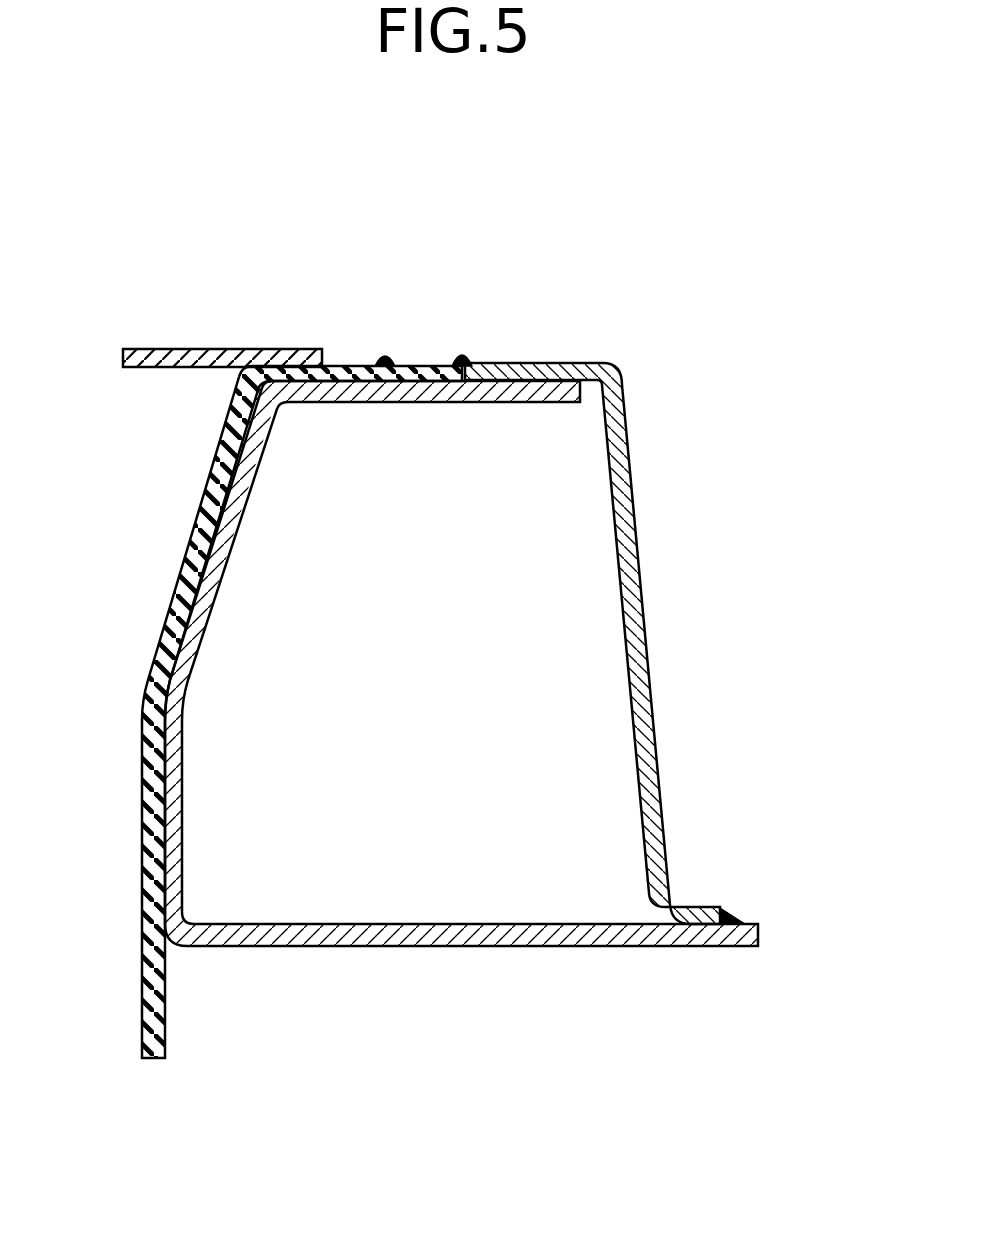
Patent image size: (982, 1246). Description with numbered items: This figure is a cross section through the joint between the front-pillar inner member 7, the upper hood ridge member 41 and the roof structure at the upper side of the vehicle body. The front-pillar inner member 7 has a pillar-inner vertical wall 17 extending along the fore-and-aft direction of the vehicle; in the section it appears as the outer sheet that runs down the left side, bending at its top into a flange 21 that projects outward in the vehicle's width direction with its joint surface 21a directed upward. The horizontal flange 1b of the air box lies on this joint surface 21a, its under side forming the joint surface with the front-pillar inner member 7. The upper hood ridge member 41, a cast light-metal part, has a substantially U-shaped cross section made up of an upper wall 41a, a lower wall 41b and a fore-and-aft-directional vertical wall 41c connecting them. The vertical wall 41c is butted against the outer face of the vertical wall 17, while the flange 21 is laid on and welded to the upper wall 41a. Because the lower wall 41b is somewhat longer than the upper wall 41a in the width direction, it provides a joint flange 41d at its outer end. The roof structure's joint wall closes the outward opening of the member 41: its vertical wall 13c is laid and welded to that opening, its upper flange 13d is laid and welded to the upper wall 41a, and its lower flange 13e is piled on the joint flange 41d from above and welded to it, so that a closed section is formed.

The horizontal flange 1b is at (197, 349).
The front-pillar inner member 7 is at (178, 580).
The pillar-inner vertical wall 17 is at (147, 805).
The flange 21 is at (348, 366).
The joint surface 21a is at (298, 350).
The vertical wall 13c is at (628, 430).
The upper flange 13d is at (527, 362).
The lower flange 13e is at (683, 907).
The upper hood ridge member 41 is at (532, 947).
The upper wall 41a is at (420, 402).
The lower wall 41b is at (450, 924).
The fore-and-aft-directional vertical wall 41c is at (203, 627).
The joint flange 41d is at (758, 930).